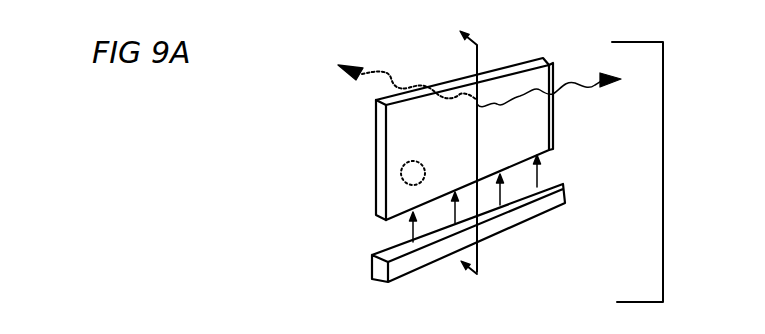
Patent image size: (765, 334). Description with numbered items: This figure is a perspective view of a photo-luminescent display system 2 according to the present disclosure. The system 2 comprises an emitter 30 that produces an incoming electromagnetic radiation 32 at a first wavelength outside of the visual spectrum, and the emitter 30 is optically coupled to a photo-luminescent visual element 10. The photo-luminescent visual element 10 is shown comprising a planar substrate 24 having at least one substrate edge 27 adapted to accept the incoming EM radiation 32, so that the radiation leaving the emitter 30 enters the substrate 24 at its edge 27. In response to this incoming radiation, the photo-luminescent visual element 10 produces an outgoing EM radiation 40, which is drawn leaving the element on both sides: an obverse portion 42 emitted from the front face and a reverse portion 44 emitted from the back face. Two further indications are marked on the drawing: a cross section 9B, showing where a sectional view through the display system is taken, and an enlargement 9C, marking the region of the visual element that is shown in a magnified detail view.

The photo-luminescent display system 2 is at (663, 200).
The photo-luminescent visual element 10 is at (374, 104).
The planar substrate 24 is at (377, 138).
The substrate edge 27 is at (384, 214).
The emitter 30 is at (371, 266).
The incoming electromagnetic radiation 32 is at (455, 209).
The outgoing electromagnetic radiation 40 is at (395, 85).
The obverse portion 42 is at (585, 95).
The reverse portion 44 is at (390, 72).
The cross section 9B is at (468, 141).
The enlargement 9C is at (415, 183).